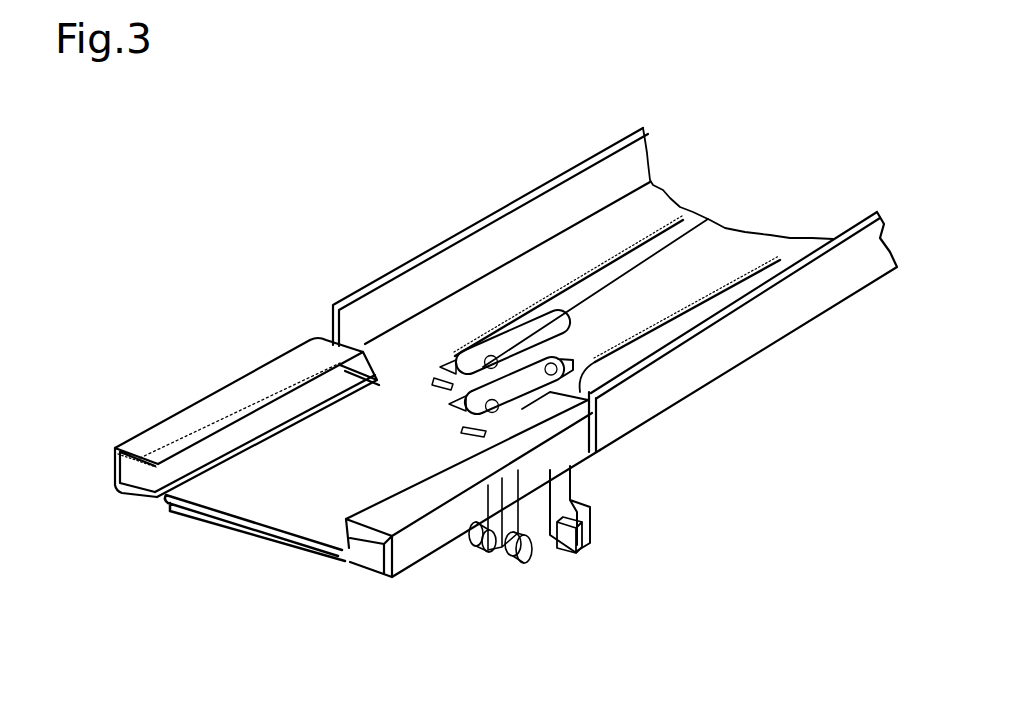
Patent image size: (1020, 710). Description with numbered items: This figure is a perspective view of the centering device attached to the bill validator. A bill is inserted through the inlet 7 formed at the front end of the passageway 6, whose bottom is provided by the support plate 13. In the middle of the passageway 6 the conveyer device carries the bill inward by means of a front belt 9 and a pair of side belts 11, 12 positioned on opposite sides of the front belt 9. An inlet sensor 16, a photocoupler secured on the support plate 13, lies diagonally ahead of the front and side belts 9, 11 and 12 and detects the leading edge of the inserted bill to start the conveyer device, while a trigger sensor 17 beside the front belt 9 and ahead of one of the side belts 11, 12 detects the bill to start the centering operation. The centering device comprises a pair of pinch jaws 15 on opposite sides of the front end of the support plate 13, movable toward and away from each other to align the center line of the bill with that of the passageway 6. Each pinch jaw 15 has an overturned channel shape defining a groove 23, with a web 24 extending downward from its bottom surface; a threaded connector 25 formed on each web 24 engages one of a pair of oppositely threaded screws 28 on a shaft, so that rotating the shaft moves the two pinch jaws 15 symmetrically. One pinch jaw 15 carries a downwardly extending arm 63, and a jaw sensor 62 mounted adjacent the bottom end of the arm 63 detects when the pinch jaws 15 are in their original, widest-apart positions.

The passageway 6 is at (409, 348).
The inlet 7 is at (255, 554).
The front belt 9 is at (550, 353).
The side belt 11 is at (618, 257).
The side belt 12 is at (703, 300).
The support plate 13 is at (293, 518).
The pinch jaw 15 is at (120, 493).
The inlet sensor 16 is at (463, 430).
The trigger sensor 17 is at (440, 386).
The groove 23 is at (138, 473).
The web 24 is at (527, 518).
The threaded connector 25 is at (528, 530).
The screw 28 is at (484, 550).
The jaw sensor 62 is at (597, 522).
The arm 63 is at (562, 485).